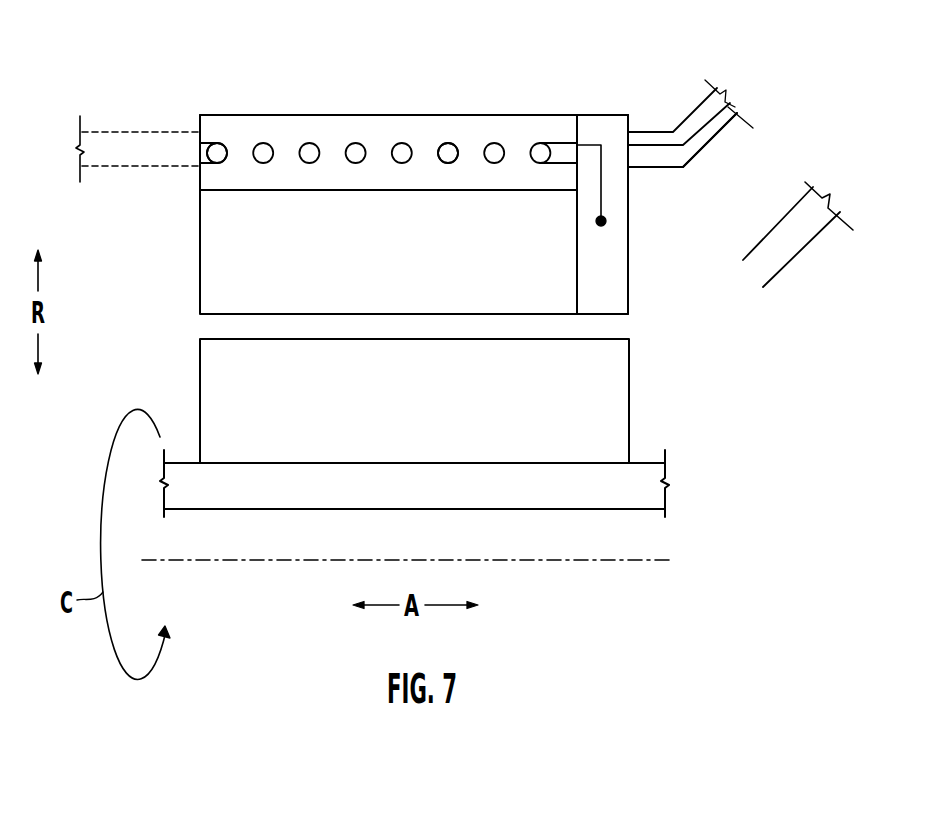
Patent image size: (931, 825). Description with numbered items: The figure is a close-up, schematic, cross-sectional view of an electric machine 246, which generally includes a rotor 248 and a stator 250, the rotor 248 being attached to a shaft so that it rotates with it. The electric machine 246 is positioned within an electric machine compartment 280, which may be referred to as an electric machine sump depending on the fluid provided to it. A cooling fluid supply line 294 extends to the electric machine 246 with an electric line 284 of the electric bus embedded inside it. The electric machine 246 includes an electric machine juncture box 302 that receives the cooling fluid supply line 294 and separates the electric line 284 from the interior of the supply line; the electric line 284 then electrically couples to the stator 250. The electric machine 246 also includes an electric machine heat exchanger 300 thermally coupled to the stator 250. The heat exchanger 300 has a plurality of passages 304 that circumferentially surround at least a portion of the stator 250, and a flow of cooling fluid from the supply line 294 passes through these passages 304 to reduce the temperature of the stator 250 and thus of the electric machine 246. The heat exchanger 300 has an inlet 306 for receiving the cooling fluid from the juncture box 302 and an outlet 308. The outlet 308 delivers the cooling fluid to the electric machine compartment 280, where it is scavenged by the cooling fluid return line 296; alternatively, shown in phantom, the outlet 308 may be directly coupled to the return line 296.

The electric machine 246 is at (424, 71).
The rotor 248 is at (430, 411).
The stator 250 is at (428, 253).
The electric machine compartment 280 is at (179, 268).
The electric line 284 is at (662, 143).
The cooling fluid supply line 294 is at (703, 104).
The cooling fluid return line 296 is at (137, 130).
The electric machine heat exchanger 300 is at (328, 132).
The electric machine juncture box 302 is at (618, 263).
The passages 304 is at (449, 133).
The inlet 306 is at (581, 153).
The outlet 308 is at (190, 148).